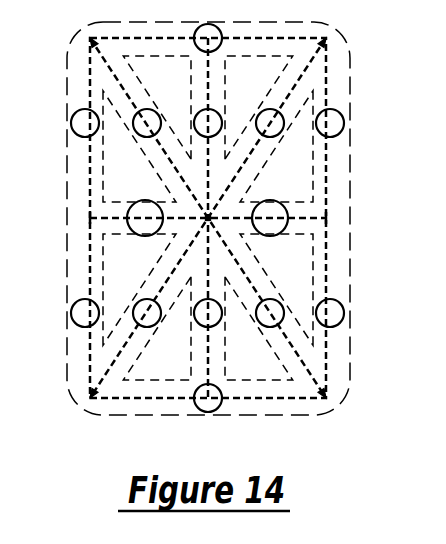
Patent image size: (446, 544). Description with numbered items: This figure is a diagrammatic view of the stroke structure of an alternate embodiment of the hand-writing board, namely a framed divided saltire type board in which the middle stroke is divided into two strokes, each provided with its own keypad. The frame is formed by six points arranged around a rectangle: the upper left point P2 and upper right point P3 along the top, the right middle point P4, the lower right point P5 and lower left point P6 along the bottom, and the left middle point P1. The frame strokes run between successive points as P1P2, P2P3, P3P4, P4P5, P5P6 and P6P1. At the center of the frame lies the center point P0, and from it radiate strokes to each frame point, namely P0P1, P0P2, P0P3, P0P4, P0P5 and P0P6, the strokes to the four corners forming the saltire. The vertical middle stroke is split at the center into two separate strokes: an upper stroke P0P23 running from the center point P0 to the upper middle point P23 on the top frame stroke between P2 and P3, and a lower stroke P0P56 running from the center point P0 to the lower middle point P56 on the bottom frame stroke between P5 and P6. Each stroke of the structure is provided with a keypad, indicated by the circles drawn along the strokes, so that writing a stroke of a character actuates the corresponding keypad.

The center point P0 is at (247, 207).
The left middle frame point P1 is at (61, 218).
The upper left frame point P2 is at (78, 30).
The upper right frame point P3 is at (337, 30).
The right middle frame point P4 is at (353, 222).
The lower right frame point P5 is at (337, 407).
The lower left frame point P6 is at (79, 406).
The upper middle point P23 is at (208, 26).
The lower middle point P56 is at (206, 418).